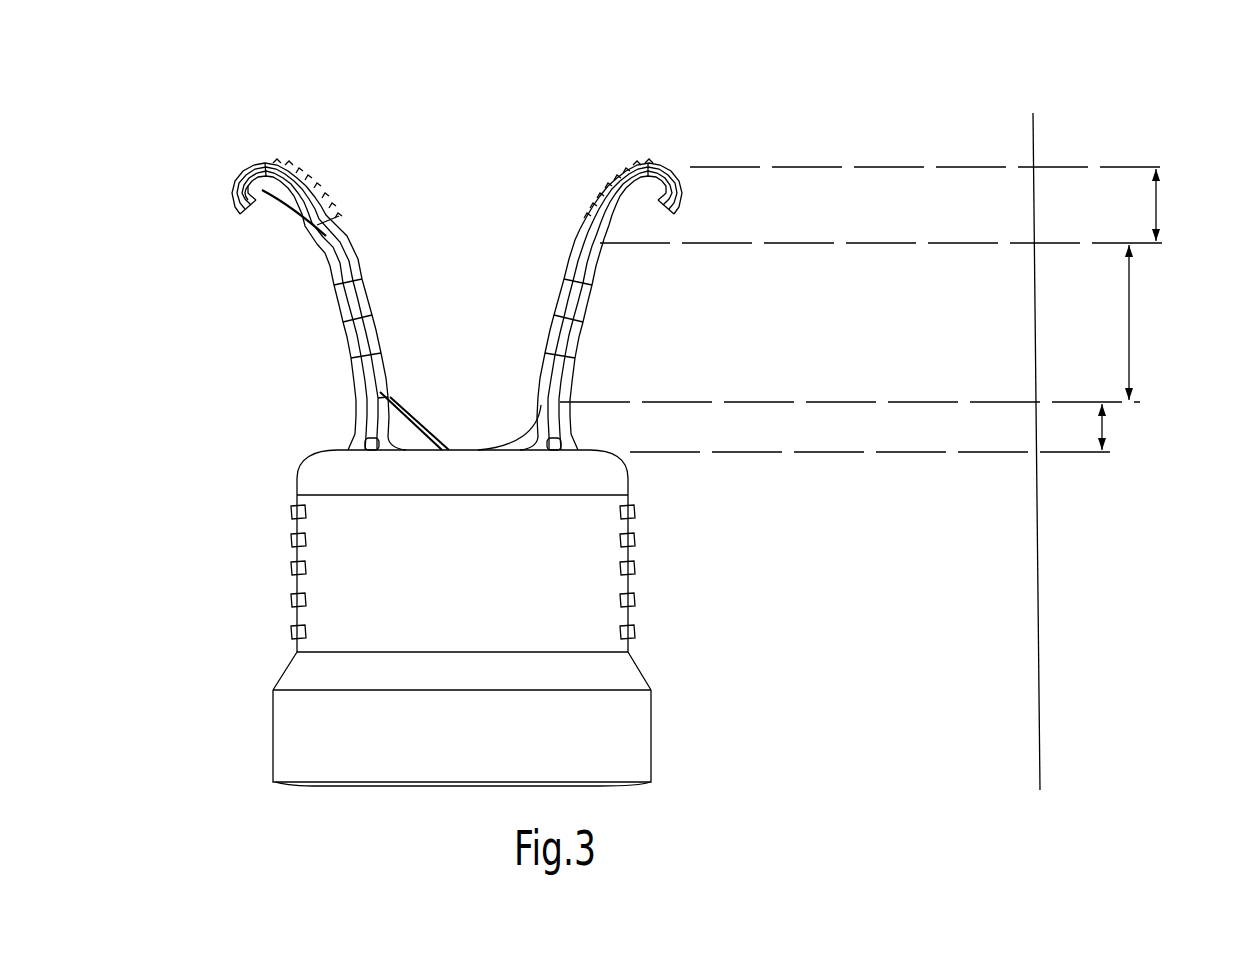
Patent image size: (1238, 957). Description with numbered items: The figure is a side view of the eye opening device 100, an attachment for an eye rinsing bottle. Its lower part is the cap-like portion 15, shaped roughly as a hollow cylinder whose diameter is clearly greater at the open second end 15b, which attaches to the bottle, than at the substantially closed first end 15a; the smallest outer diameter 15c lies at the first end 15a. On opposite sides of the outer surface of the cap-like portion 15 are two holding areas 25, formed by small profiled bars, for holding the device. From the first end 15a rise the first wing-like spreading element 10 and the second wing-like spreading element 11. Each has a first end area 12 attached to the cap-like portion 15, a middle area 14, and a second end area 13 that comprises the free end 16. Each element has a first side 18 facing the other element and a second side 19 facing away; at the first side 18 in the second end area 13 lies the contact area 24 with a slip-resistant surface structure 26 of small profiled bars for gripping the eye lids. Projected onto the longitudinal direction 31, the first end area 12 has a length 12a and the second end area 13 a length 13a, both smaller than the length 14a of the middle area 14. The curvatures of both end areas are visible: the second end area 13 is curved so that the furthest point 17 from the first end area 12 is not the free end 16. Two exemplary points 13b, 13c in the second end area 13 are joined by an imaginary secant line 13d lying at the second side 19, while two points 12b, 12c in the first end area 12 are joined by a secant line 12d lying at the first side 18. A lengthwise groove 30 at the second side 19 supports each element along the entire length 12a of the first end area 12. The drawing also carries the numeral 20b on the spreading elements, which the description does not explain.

The eye opening device 100 is at (745, 823).
The first wing-like spreading element 10 is at (228, 125).
The second wing-like spreading element 11 is at (612, 130).
The first end area 12 is at (340, 409).
The length of the first end area 12a is at (1102, 428).
The exemplary point in the first end area 12b is at (380, 382).
The exemplary point in the first end area 12c is at (445, 449).
The secant line of the first end area 12d is at (400, 414).
The second end area 13 is at (222, 170).
The length of the second end area 13a is at (1156, 205).
The exemplary point in the second end area 13b is at (240, 188).
The exemplary point in the second end area 13c is at (332, 235).
The secant line of the second end area 13d is at (262, 205).
The middle area 14 is at (375, 278).
The length of the middle area 14a is at (1129, 322).
The cap-like portion 15 is at (240, 672).
The first end 15a is at (632, 466).
The second end 15b is at (680, 771).
The smallest outer diameter 15c is at (385, 795).
The free end 16 is at (236, 200).
The furthest point 17 is at (274, 165).
The first side 18 is at (347, 237).
The second side 19 is at (347, 342).
The arm edge 20b is at (343, 303).
The contact area 24 is at (305, 180).
The holding areas 25 is at (632, 568).
The slip-resistant surface structure 26 is at (602, 172).
The lengthwise groove 30 is at (350, 433).
The longitudinal direction 31 is at (1038, 655).